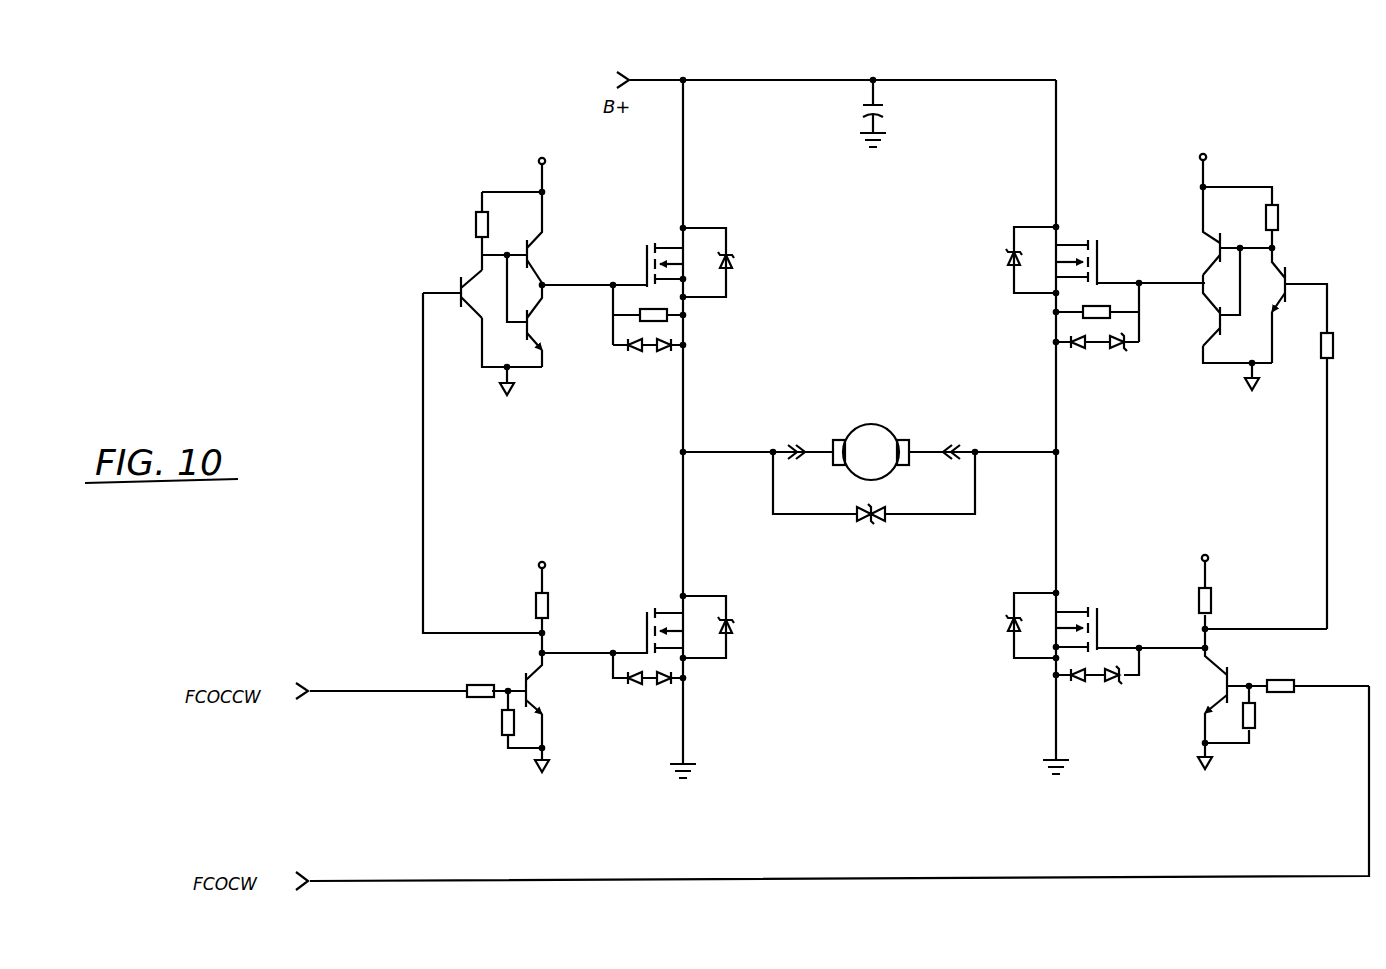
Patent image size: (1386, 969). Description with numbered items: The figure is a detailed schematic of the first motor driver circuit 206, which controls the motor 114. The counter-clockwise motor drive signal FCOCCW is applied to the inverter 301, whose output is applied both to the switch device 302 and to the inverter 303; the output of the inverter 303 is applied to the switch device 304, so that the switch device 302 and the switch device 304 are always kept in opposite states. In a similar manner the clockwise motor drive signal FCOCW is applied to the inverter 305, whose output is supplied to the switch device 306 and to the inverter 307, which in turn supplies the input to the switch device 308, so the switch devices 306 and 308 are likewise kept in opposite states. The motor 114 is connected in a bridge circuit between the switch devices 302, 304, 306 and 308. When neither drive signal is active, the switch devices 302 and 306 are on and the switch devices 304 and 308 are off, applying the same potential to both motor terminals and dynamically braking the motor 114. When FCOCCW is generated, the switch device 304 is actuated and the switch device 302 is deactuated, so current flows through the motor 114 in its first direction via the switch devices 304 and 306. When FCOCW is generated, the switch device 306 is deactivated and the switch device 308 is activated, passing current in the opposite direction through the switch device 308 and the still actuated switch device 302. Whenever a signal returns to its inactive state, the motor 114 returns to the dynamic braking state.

The first motor driver circuit 206 is at (378, 295).
The inverter 301 is at (519, 621).
The switch device 302 is at (652, 602).
The inverter 303 is at (461, 213).
The switch device 304 is at (663, 235).
The inverter 305 is at (1237, 609).
The switch device 306 is at (1089, 606).
The inverter 307 is at (1279, 190).
The switch device 308 is at (1085, 232).
The motor 114 is at (885, 424).